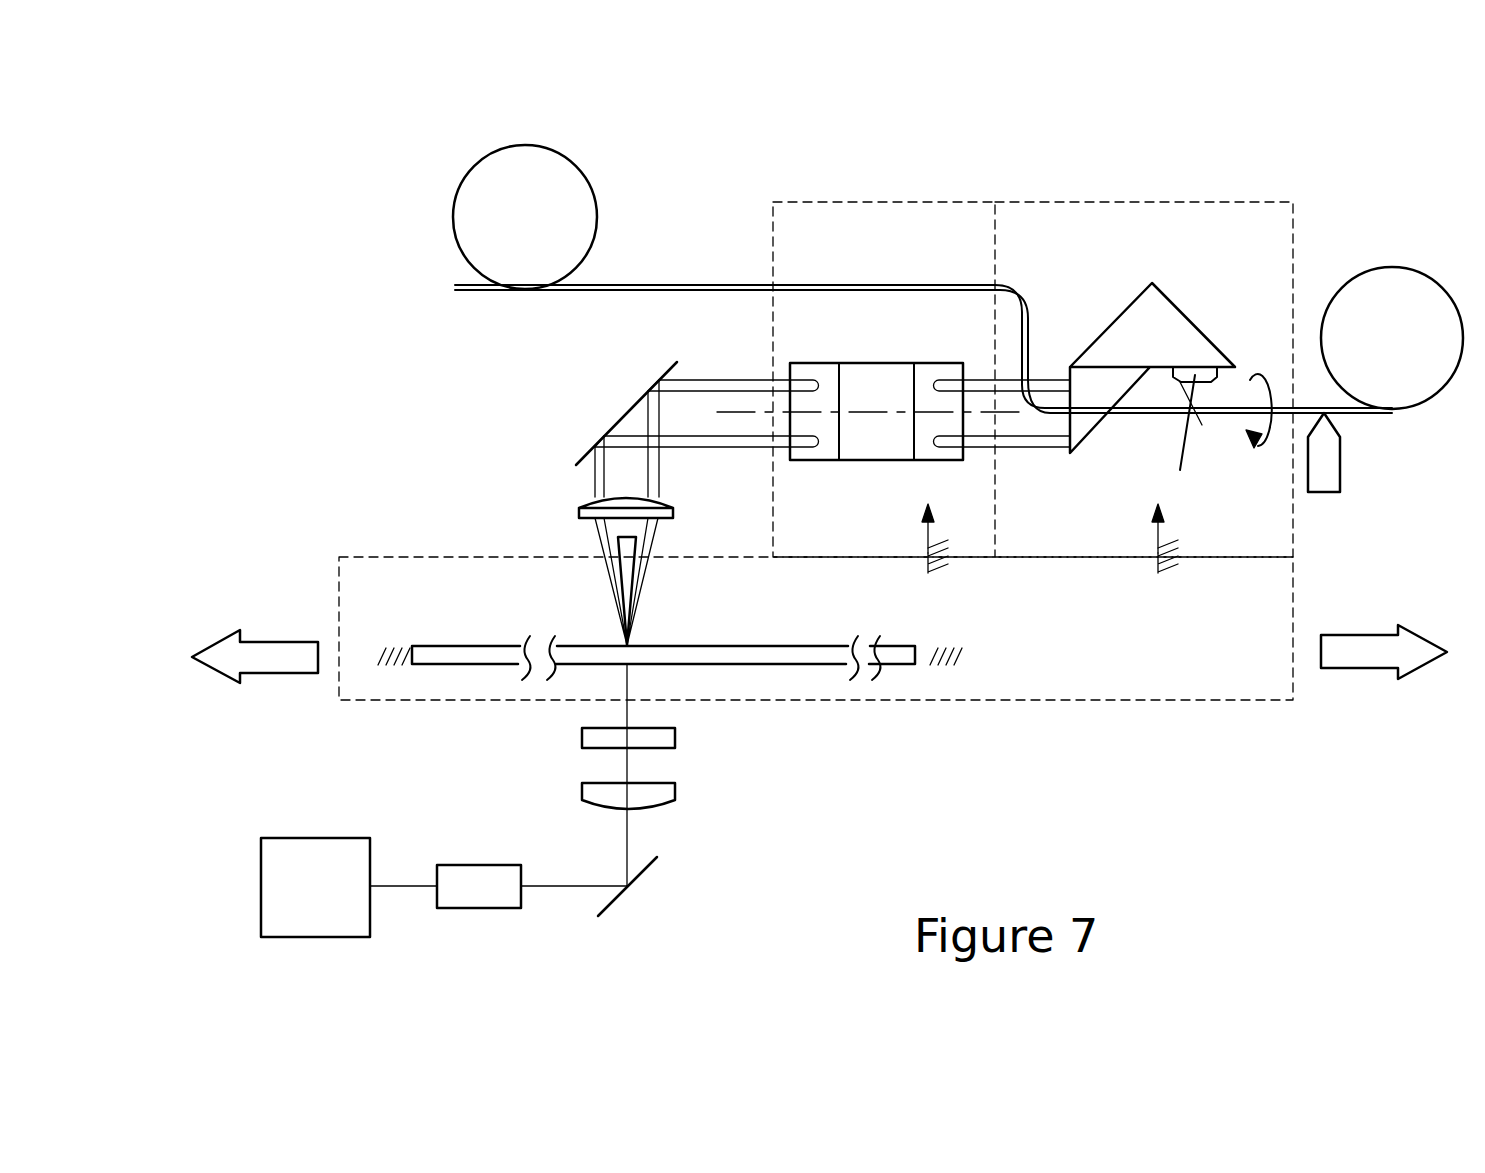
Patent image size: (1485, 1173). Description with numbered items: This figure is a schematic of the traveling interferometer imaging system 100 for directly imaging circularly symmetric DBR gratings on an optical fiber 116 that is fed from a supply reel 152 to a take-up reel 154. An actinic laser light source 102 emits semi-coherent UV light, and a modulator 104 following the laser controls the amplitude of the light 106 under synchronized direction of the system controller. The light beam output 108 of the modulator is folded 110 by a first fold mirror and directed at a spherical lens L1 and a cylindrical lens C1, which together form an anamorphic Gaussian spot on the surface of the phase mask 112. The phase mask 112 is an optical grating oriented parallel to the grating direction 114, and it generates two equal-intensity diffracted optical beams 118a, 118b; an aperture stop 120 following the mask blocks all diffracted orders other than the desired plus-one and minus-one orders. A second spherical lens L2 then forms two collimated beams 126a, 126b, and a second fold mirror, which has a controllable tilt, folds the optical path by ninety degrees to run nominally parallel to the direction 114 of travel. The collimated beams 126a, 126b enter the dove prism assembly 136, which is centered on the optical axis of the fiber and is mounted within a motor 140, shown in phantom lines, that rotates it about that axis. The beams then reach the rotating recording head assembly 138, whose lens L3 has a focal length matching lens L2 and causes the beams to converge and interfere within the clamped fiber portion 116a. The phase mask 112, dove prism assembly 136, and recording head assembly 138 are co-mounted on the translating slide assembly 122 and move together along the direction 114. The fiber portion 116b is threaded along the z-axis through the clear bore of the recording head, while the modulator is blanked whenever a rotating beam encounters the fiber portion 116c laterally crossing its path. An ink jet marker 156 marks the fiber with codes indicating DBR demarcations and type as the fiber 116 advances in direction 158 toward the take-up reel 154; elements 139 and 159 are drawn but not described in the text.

The traveling interferometer imaging system 100 is at (488, 426).
The actinic laser light source 102 is at (298, 838).
The modulator 104 is at (467, 908).
The light 106 is at (378, 886).
The light beam output 108 is at (594, 886).
The fold 110 is at (632, 858).
The phase mask 112 is at (725, 664).
The longitudinal (grating) direction 114 is at (258, 675).
The optical fiber 116 is at (1028, 308).
The fiber portion 116a is at (1180, 470).
The fiber portion 116b is at (1057, 417).
The fiber portion 116c is at (1028, 378).
The diffracted optical beam 118a is at (600, 542).
The diffracted optical beam 118b is at (650, 542).
The aperture stop 120 is at (634, 560).
The translating slide assembly 122 is at (1133, 700).
The collimated beam 126a is at (585, 475).
The collimated beam 126b is at (661, 462).
The dove prism assembly 136 is at (882, 363).
The recording head assembly 138 is at (1183, 310).
The fiber 139 is at (1018, 413).
The motor 140 is at (848, 202).
The supply reel 152 is at (587, 185).
The take-up reel 154 is at (1393, 266).
The ink jet marker 156 is at (1340, 470).
The fiber advance direction 158 is at (1113, 202).
The web motion arrow 159 is at (1350, 635).
The spherical lens L1 is at (647, 793).
The second spherical lens L2 is at (646, 513).
The spherical lens L3 is at (1188, 405).
The cylindrical lens C1 is at (649, 739).